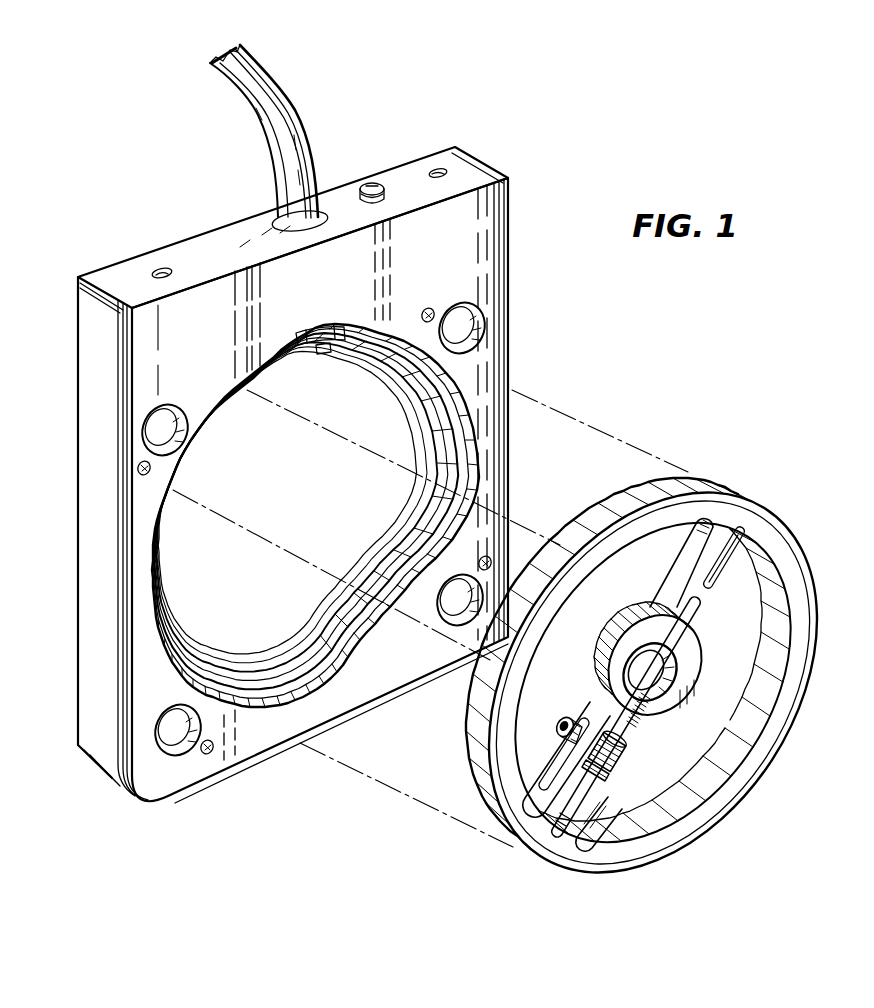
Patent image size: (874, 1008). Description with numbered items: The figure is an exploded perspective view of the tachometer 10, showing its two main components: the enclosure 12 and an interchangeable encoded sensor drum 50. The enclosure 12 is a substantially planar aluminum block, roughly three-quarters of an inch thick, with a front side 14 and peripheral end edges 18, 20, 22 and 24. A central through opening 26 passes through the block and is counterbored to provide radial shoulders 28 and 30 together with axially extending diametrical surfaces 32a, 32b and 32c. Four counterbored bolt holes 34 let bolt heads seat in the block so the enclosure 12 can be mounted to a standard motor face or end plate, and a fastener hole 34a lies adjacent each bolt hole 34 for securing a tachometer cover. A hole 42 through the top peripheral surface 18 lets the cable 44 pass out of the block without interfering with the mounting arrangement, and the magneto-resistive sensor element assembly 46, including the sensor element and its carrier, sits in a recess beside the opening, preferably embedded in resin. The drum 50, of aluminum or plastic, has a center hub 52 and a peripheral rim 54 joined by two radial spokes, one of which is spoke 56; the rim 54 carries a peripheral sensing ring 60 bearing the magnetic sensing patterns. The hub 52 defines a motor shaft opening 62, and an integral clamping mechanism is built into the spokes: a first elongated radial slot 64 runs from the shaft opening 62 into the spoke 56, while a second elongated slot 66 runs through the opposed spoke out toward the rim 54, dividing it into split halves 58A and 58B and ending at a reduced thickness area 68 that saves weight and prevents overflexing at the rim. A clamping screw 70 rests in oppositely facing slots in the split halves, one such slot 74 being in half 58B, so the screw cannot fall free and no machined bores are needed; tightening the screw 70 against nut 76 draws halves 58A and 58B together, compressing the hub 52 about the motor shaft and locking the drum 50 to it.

The tachometer 10 is at (562, 171).
The enclosure 12 is at (203, 232).
The front side 14 is at (484, 234).
The top peripheral end edge 18 is at (402, 180).
The peripheral end edge 20 is at (346, 716).
The peripheral end edge 22 is at (95, 458).
The peripheral end edge 24 is at (510, 360).
The central through opening 26 is at (336, 399).
The radial shoulder 28 is at (291, 697).
The radial shoulder 30 is at (333, 625).
The axially extending diametrical surface 32a is at (395, 652).
The axially extending diametrical surface 32b is at (313, 656).
The axially extending diametrical surface 32c is at (370, 582).
The counterbored bolt holes 34 is at (482, 330).
The fastener holes 34a is at (431, 307).
The hole 42 is at (328, 200).
The cable 44 is at (273, 117).
The magneto-resistive sensor element assembly 46 is at (318, 349).
The encoded sensor drum 50 is at (757, 504).
The center hub 52 is at (690, 682).
The peripheral rim 54 is at (800, 630).
The radial spoke 56 is at (723, 583).
The split half of spoke 58A is at (530, 795).
The split half of spoke 58B is at (593, 797).
The peripheral sensing ring 60 is at (800, 567).
The motor shaft opening 62 is at (640, 667).
The first elongated radial slot 64 is at (690, 628).
The second elongated slot 66 is at (610, 773).
The reduced thickness area 68 is at (556, 824).
The clamping screw 70 is at (567, 716).
The slot 74 is at (623, 737).
The nut 76 is at (627, 753).